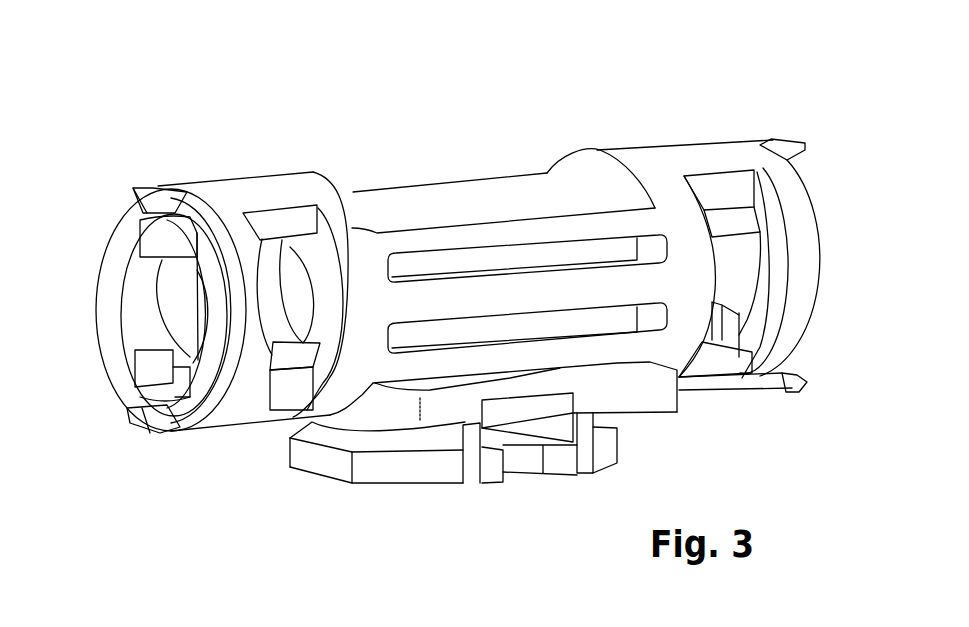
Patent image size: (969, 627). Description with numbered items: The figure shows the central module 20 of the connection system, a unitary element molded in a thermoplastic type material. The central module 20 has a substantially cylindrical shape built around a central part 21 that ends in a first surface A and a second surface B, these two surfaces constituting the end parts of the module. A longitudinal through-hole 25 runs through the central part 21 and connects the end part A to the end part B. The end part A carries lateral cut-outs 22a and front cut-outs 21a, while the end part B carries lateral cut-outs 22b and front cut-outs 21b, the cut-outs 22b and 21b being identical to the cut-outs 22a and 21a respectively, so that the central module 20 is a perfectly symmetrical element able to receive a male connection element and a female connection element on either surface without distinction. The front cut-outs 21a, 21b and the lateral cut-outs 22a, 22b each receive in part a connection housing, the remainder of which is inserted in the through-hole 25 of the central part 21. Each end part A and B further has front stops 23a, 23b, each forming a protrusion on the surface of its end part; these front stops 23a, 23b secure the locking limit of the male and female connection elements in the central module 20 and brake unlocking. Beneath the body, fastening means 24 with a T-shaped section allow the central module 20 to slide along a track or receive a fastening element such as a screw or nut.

The central module 20 is at (487, 158).
The central part 21 is at (420, 207).
The front cut-outs 21a is at (160, 237).
The front cut-outs 21b is at (729, 333).
The lateral cut-outs 22a is at (177, 300).
The lateral cut-outs 22b is at (734, 270).
The front stops 23a is at (137, 199).
The front stops 23b is at (787, 147).
The fastening means 24 is at (490, 467).
The longitudinal through-hole 25 is at (295, 277).
The first surface A is at (230, 192).
The second surface B is at (697, 157).